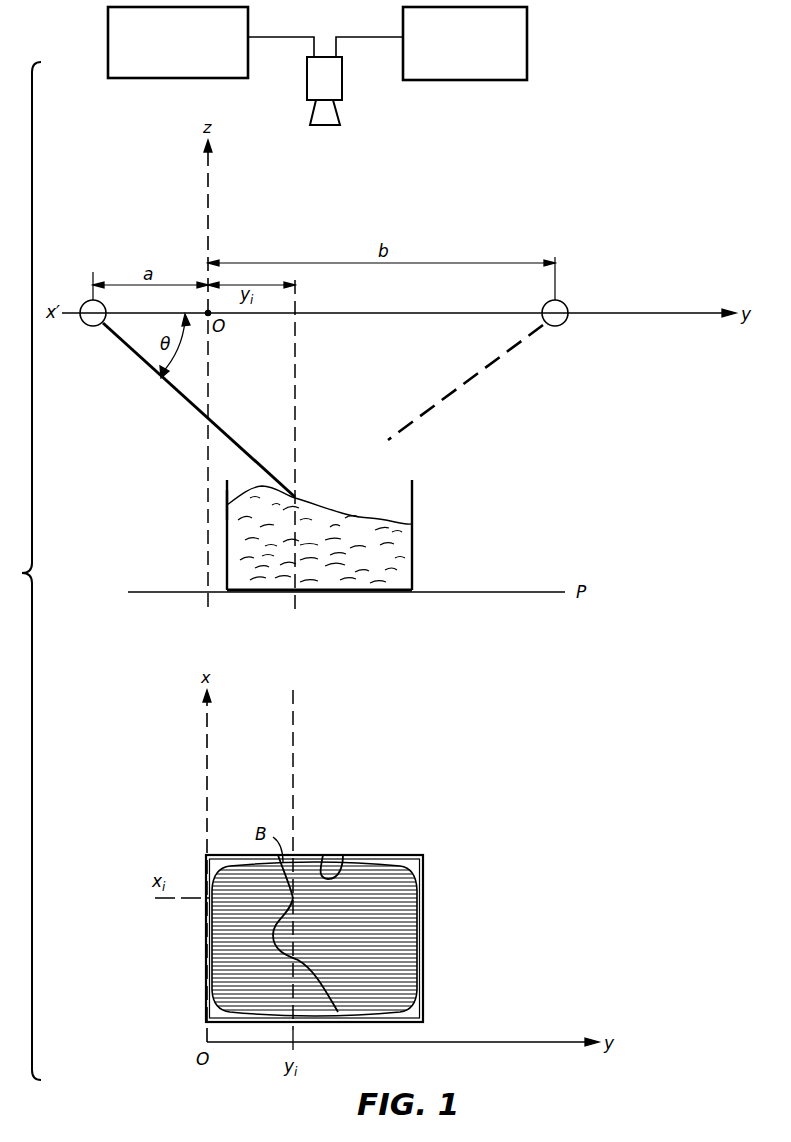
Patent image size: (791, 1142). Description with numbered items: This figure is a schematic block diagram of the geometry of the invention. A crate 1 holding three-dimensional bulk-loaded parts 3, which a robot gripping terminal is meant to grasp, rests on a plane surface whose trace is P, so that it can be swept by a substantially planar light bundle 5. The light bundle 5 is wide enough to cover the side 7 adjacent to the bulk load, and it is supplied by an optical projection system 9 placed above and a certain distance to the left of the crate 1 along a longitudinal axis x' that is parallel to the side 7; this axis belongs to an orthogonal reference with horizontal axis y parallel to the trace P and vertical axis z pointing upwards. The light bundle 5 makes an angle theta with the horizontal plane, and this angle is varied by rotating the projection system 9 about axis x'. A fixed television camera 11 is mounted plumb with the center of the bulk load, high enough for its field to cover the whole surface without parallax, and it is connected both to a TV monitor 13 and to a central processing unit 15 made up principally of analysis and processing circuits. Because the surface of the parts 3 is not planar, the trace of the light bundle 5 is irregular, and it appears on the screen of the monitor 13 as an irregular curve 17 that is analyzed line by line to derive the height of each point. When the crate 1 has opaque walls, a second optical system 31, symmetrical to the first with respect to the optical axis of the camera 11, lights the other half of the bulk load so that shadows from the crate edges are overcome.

The crate 1 is at (413, 535).
The bulk-loaded parts 3 is at (350, 517).
The planar light bundle 5 is at (208, 420).
The side 7 is at (227, 502).
The optical projection system 9 is at (84, 326).
The television camera 11 is at (343, 86).
The TV monitor 13 is at (128, 70).
The central processing unit 15 is at (474, 74).
The irregular curve 17 is at (338, 866).
The second optical system 31 is at (564, 302).